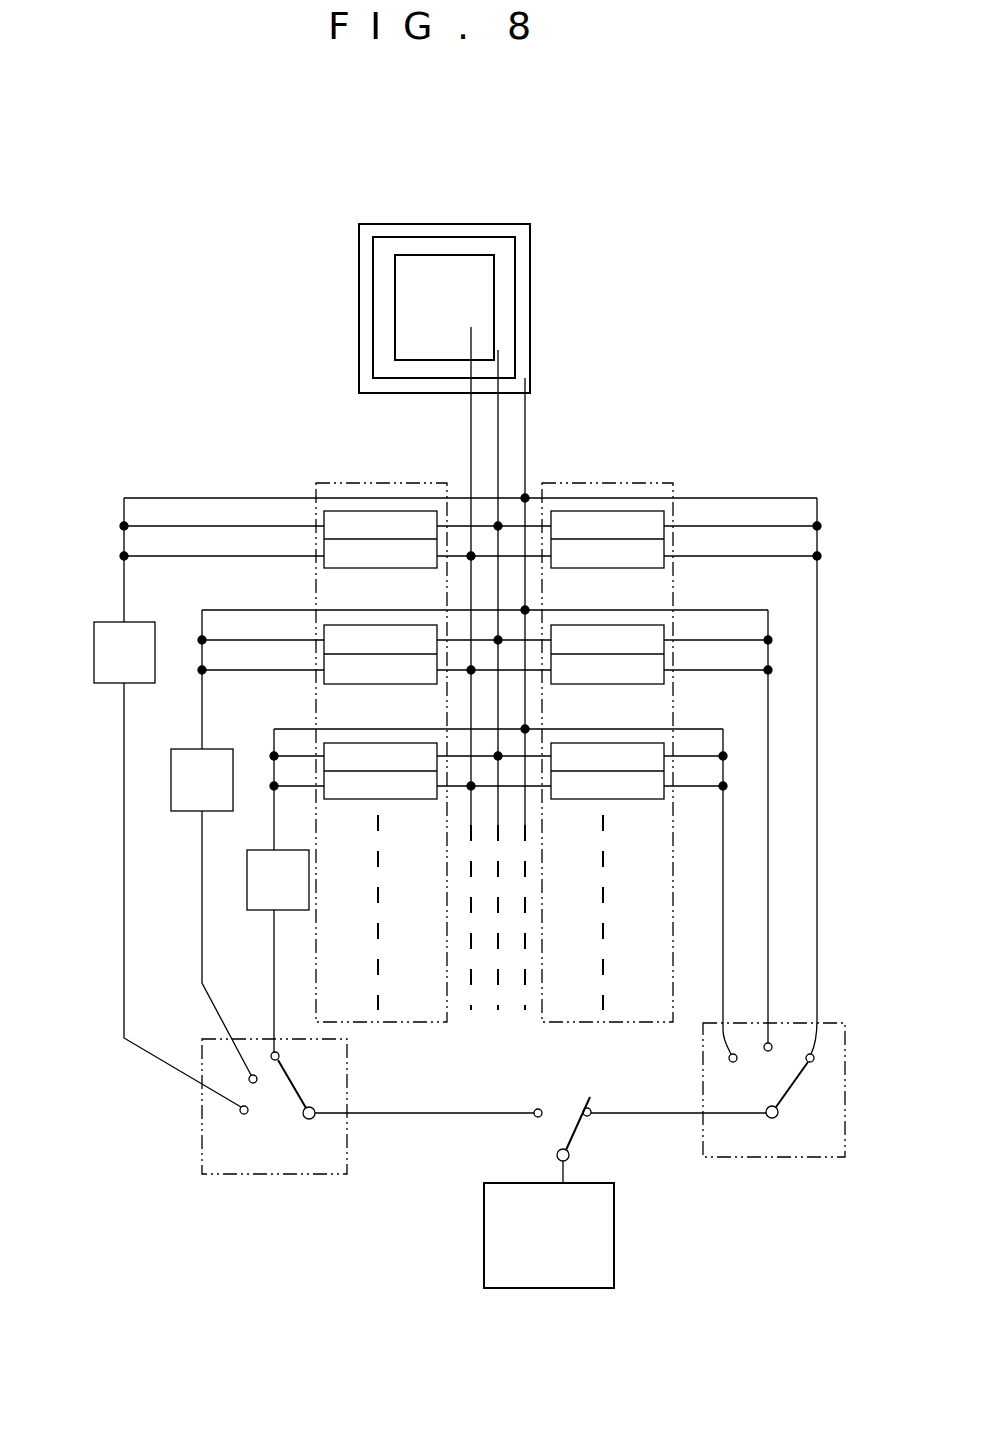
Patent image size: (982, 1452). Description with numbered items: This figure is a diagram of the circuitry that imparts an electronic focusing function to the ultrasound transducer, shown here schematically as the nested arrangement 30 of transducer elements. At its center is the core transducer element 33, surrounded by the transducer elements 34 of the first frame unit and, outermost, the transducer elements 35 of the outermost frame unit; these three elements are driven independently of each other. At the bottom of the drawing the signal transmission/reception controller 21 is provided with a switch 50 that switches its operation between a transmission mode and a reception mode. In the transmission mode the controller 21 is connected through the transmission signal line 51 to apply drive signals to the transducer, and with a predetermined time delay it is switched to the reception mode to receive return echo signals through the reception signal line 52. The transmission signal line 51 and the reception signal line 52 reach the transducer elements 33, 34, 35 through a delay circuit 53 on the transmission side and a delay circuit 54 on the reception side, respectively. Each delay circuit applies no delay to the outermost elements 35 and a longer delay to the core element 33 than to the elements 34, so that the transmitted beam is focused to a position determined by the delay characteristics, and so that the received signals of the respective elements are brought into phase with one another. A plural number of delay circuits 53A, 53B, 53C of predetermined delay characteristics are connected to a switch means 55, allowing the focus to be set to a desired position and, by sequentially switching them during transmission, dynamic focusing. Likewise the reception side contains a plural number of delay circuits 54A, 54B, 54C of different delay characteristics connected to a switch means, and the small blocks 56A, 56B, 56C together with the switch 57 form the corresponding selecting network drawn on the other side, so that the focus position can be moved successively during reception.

The capacitive sensor 30 is at (456, 266).
The core transducer element 33 is at (475, 307).
The transducer elements of the first frame unit 34 is at (387, 307).
The transducer elements of the outermost frame unit 35 is at (365, 232).
The delay circuit on the transmission side 53 is at (288, 693).
The delay circuit 53A is at (378, 513).
The delay circuit 53B is at (324, 628).
The delay circuit 53C is at (324, 795).
The delay circuit on the reception side 54 is at (659, 709).
The delay circuit 54A is at (657, 510).
The delay circuit 54B is at (667, 632).
The delay circuit 54C is at (644, 800).
The reference capacitor 56A is at (107, 621).
The reference capacitor 56B is at (171, 774).
The reference capacitor 56C is at (247, 880).
The selector switch 57 is at (272, 1176).
The switch means 55 is at (797, 1160).
The switch 50 is at (575, 1120).
The transmission signal line 51 is at (665, 1114).
The reception signal line 52 is at (398, 1114).
The signal transmission/reception controller 21 is at (549, 1224).